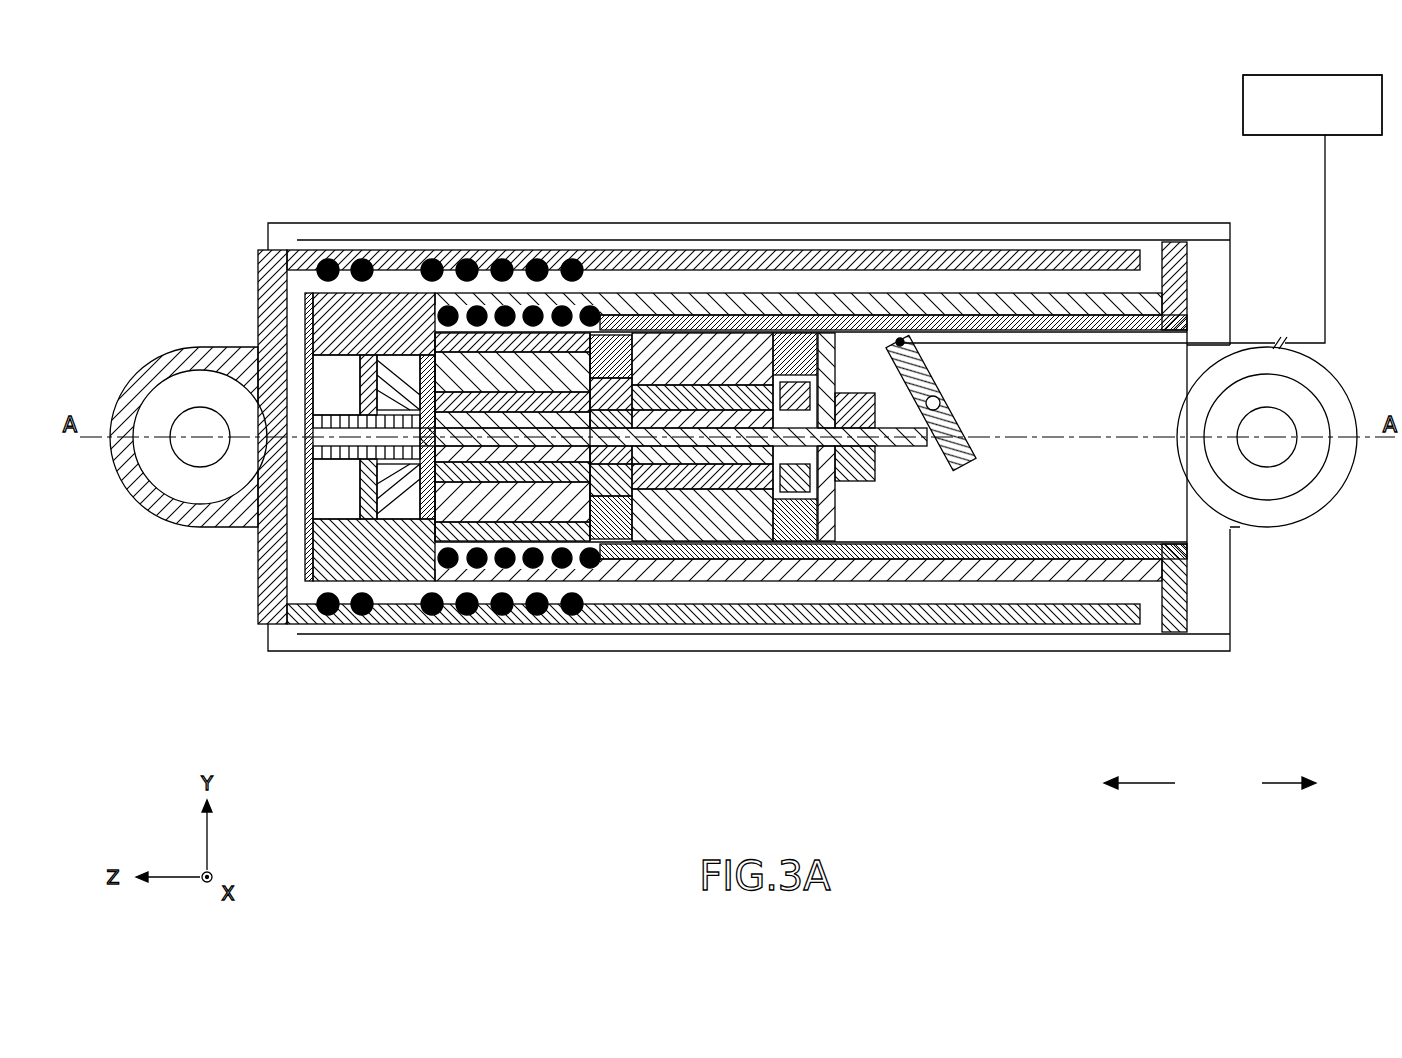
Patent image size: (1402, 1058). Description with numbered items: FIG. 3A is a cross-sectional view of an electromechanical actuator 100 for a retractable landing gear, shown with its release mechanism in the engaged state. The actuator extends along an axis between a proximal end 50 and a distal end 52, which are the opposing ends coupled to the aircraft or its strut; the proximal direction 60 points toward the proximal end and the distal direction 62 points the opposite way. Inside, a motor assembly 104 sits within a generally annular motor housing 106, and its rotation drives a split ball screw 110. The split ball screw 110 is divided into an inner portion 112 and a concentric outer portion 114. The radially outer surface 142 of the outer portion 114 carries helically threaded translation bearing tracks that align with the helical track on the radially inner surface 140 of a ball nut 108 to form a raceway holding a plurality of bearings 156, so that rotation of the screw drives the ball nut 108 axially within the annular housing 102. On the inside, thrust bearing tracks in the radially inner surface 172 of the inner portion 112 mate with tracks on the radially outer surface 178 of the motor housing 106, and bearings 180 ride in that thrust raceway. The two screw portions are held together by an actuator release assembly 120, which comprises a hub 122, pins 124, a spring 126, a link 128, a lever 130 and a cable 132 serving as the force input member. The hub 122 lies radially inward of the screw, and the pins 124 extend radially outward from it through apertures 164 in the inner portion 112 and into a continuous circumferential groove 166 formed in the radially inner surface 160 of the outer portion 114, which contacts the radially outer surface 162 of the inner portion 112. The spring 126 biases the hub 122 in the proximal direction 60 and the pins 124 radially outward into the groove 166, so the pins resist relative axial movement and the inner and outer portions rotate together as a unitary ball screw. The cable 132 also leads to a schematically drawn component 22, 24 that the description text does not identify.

The electromechanical actuator 100 is at (175, 93).
The housing 102 is at (1107, 235).
The motor assembly 104 is at (740, 367).
The motor housing 106 is at (755, 315).
The ball nut 108 is at (935, 262).
The split ball screw 110 is at (508, 132).
The inner portion 112 is at (583, 307).
The outer portion 114 is at (548, 300).
The actuator release assembly 120 is at (982, 755).
The hub 122 is at (432, 493).
The pins 124 is at (393, 483).
The spring 126 is at (350, 450).
The link 128 is at (713, 445).
The lever 130 is at (940, 467).
The cable 132 is at (1045, 348).
The radially inner surface 140 is at (905, 272).
The radially outer surface 142 is at (412, 272).
The bearings 156 is at (483, 293).
The radially inner surface 160 is at (300, 308).
The radially outer surface 162 is at (303, 318).
The apertures 164 is at (380, 325).
The groove 166 is at (345, 292).
The radially inner surface 172 is at (630, 320).
The radially outer surface 178 is at (527, 307).
The bearings 180 is at (610, 320).
The proximal end 50 is at (1347, 395).
The distal end 52 is at (155, 348).
The proximal direction 60 is at (1268, 786).
The distal direction 62 is at (1152, 786).
The controller 22 is at (1312, 105).
The power source 24 is at (1312, 105).